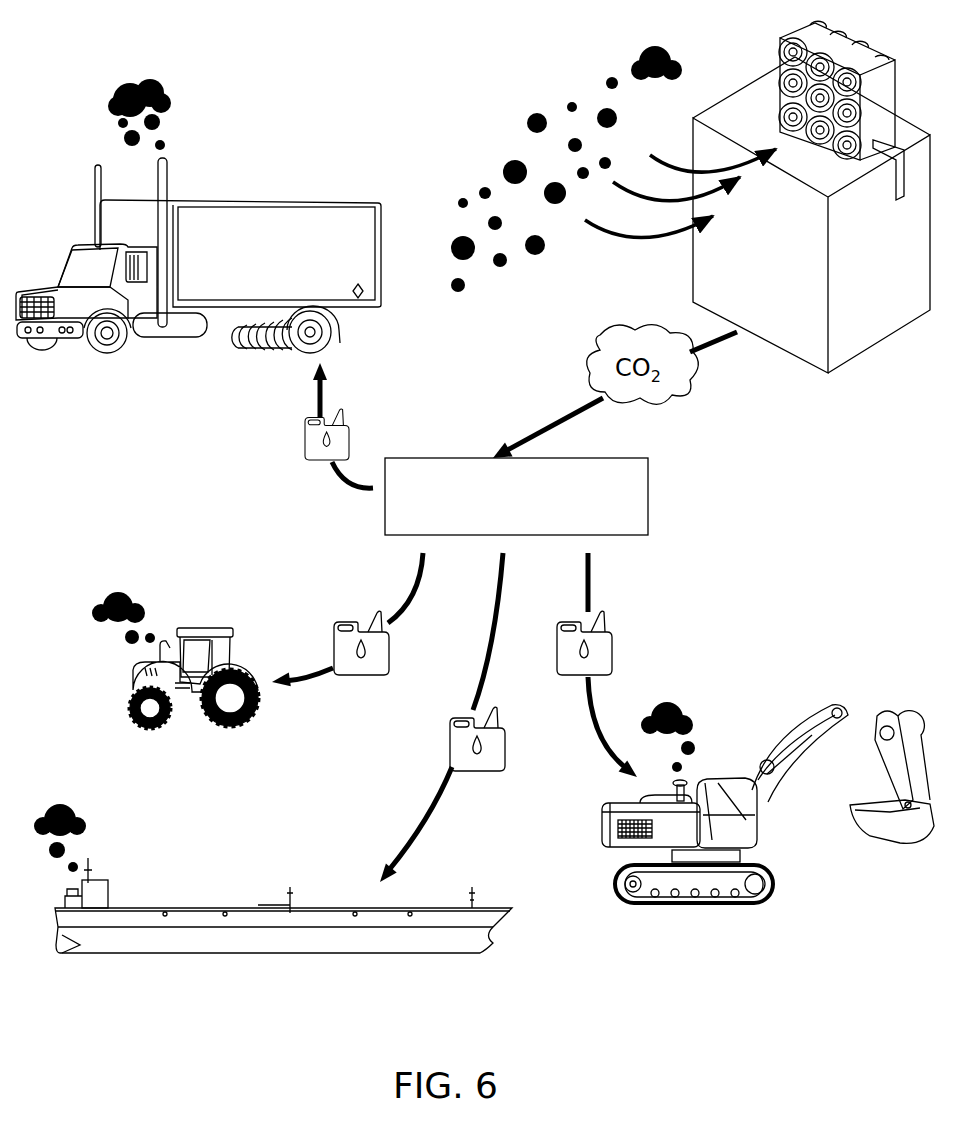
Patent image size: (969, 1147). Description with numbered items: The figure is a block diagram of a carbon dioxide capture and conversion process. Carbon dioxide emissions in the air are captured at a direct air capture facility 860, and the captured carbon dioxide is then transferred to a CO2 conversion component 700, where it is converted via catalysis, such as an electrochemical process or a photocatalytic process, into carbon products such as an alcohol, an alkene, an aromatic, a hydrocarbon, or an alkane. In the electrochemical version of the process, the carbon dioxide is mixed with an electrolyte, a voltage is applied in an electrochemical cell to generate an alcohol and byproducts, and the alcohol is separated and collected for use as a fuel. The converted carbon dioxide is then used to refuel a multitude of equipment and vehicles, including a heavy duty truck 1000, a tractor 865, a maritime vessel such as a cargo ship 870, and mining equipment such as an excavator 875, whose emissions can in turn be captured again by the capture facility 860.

The heavy duty truck 1000 is at (268, 197).
The direct air capture facility 860 is at (756, 46).
The CO2 conversion component 700 is at (620, 457).
The tractor 865 is at (198, 630).
The cargo ship 870 is at (178, 908).
The excavator 875 is at (738, 905).